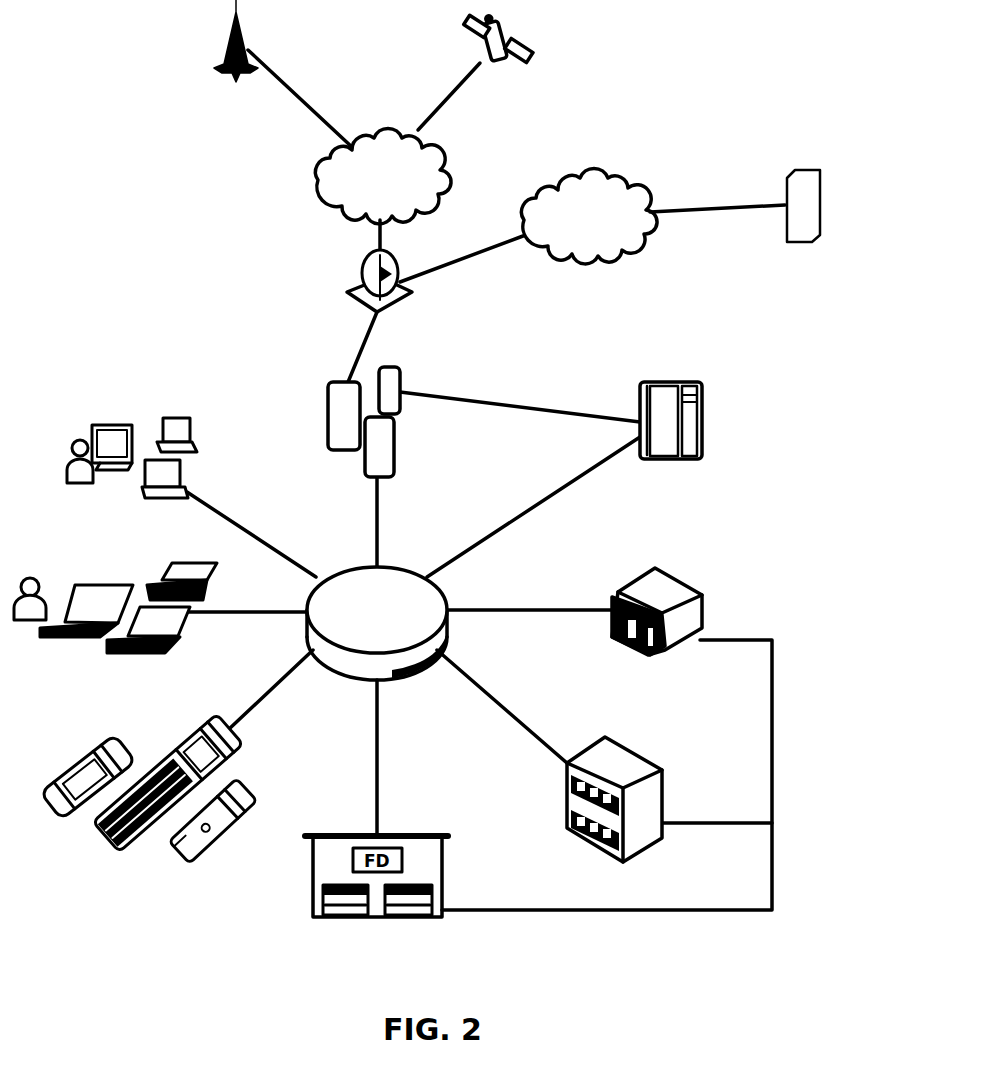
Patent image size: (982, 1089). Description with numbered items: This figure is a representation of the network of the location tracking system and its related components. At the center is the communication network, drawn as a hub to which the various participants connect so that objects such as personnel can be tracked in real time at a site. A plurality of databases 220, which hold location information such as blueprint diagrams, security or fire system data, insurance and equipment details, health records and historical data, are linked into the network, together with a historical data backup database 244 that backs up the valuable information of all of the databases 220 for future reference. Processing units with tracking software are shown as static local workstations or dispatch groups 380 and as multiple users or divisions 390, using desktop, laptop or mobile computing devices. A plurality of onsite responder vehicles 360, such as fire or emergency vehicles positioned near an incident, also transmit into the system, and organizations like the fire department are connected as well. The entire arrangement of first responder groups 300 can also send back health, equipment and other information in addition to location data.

The databases 220 is at (365, 450).
The historical data backup database 244 is at (667, 460).
The first responder groups 300 is at (772, 788).
The onsite responder vehicles 360 is at (187, 850).
The static local workstations or dispatch groups 380 is at (140, 467).
The multiple users/divisions 390 is at (130, 650).